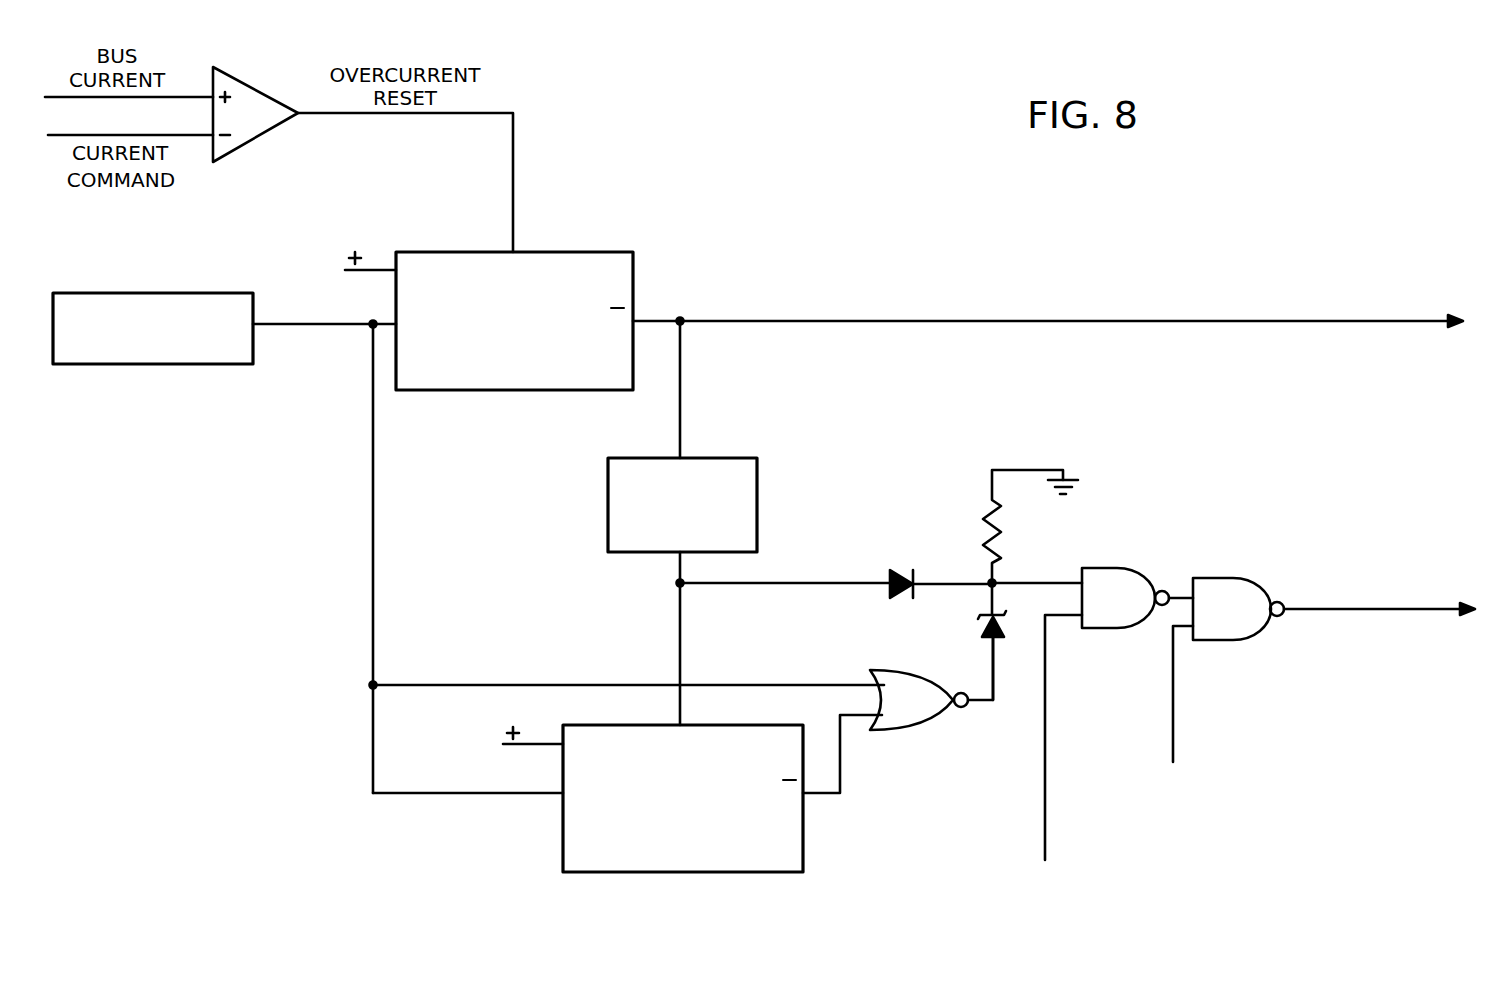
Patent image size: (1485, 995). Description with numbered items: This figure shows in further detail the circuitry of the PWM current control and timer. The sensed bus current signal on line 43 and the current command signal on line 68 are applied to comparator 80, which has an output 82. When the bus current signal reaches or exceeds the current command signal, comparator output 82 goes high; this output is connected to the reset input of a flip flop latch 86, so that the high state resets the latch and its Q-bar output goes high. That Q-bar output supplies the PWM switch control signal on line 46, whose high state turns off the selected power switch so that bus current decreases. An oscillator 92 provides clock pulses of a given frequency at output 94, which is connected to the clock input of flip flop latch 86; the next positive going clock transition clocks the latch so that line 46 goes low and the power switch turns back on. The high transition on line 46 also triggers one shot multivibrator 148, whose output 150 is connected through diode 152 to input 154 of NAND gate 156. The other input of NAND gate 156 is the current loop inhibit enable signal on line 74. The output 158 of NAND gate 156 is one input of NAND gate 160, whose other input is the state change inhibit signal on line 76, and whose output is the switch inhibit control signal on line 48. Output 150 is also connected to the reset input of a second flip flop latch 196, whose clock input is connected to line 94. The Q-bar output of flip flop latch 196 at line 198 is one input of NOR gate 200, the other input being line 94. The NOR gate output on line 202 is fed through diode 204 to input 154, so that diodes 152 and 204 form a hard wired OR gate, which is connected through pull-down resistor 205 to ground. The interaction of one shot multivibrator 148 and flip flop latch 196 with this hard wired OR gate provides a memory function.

The line 43 is at (57, 97).
The line 68 is at (175, 135).
The comparator 80 is at (243, 80).
The comparator output 82 is at (318, 113).
The flip flop latch 86 is at (572, 252).
The oscillator 92 is at (183, 364).
The oscillator output 94 is at (340, 324).
The line 46 is at (778, 321).
The one shot multivibrator 148 is at (728, 458).
The output 150 is at (680, 583).
The diode 152 is at (900, 575).
The input 154 is at (1060, 583).
The NAND gate 156 is at (1103, 568).
The output 158 is at (1176, 598).
The NAND gate 160 is at (1247, 640).
The line 48 is at (1370, 609).
The line 74 is at (1045, 718).
The line 76 is at (1173, 705).
The flip flop latch 196 is at (722, 725).
The line 198 is at (840, 770).
The NOR gate 200 is at (882, 669).
The line 202 is at (984, 705).
The diode 204 is at (983, 628).
The pull-down resistor 205 is at (990, 513).